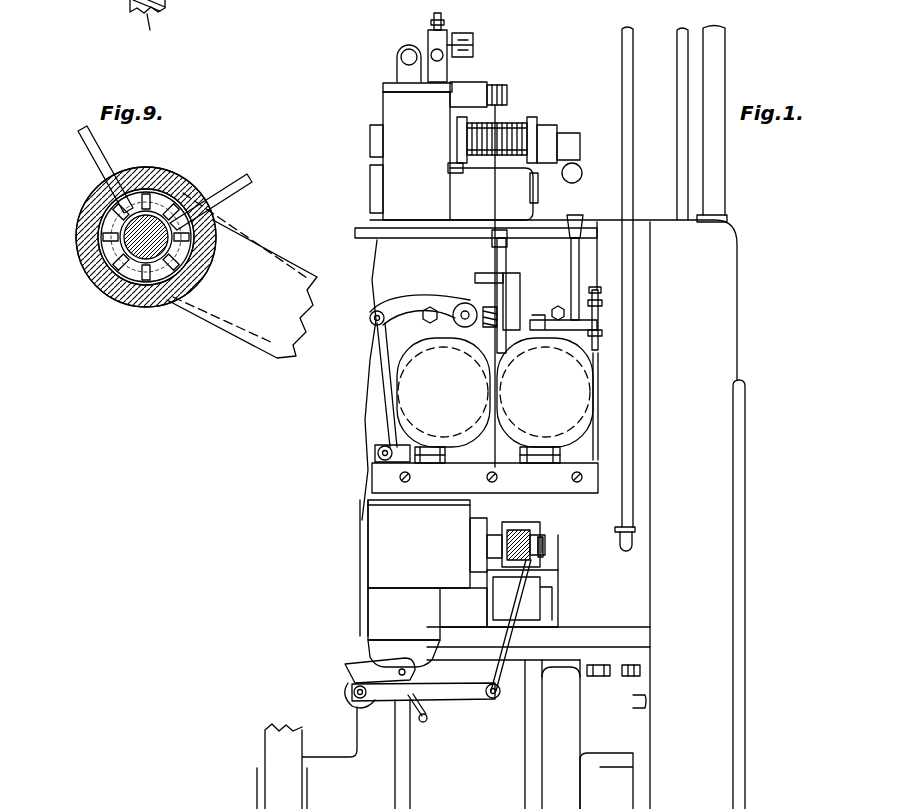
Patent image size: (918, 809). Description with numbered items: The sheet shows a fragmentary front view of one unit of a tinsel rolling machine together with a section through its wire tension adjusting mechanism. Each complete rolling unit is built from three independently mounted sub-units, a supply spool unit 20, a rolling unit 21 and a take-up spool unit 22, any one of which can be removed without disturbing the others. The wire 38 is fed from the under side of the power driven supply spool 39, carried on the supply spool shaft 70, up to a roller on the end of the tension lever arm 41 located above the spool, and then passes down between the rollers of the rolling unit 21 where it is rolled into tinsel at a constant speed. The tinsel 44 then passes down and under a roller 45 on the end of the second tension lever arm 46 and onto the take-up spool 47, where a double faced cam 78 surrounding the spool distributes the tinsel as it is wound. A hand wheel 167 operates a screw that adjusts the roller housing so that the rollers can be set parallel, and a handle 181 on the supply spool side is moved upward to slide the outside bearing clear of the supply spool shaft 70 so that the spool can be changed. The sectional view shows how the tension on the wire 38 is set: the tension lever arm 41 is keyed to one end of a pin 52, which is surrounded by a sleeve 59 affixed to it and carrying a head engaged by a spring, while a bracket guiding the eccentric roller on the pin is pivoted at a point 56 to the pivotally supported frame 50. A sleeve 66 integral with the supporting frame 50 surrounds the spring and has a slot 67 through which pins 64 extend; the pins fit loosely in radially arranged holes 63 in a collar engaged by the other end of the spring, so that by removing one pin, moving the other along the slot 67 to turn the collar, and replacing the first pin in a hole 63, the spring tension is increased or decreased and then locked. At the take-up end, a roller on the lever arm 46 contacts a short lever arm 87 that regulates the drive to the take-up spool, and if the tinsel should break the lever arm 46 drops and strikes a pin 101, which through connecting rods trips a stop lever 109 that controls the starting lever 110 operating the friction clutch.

In FIG. 1, the supply spool unit 20 is at (515, 112).
In FIG. 1, the rolling unit 21 is at (492, 374).
In FIG. 1, the take-up spool unit 22 is at (552, 553).
In FIG. 1, the wire 38 is at (460, 200).
In FIG. 1, the supply spool 39 is at (520, 118).
In FIG. 9, the tension lever arm 41 is at (283, 250).
In FIG. 1, the tension lever arm 41 is at (497, 118).
In FIG. 1, the tinsel 44 is at (495, 490).
In FIG. 1, the roller 45 is at (493, 698).
In FIG. 1, the second tension lever arm 46 is at (452, 700).
In FIG. 1, the take-up spool 47 is at (540, 533).
In FIG. 9, the supporting frame 50 is at (162, 35).
In FIG. 9, the pin 52 is at (124, 238).
In FIG. 9, the pivot point 56 is at (182, 6).
In FIG. 9, the sleeve 59 is at (118, 272).
In FIG. 9, the holes 63 is at (170, 205).
In FIG. 9, the pins 64 is at (100, 160).
In FIG. 9, the sleeve 66 is at (135, 303).
In FIG. 9, the slot 67 is at (150, 178).
In FIG. 1, the supply spool shaft 70 is at (465, 145).
In FIG. 1, the double faced cam 78 is at (515, 535).
In FIG. 1, the short lever arm 87 is at (352, 665).
In FIG. 1, the pin 101 is at (425, 722).
In FIG. 1, the stop lever 109 is at (600, 310).
In FIG. 1, the starting lever 110 is at (577, 215).
In FIG. 1, the hand wheel 167 is at (465, 303).
In FIG. 1, the handle 181 is at (575, 150).